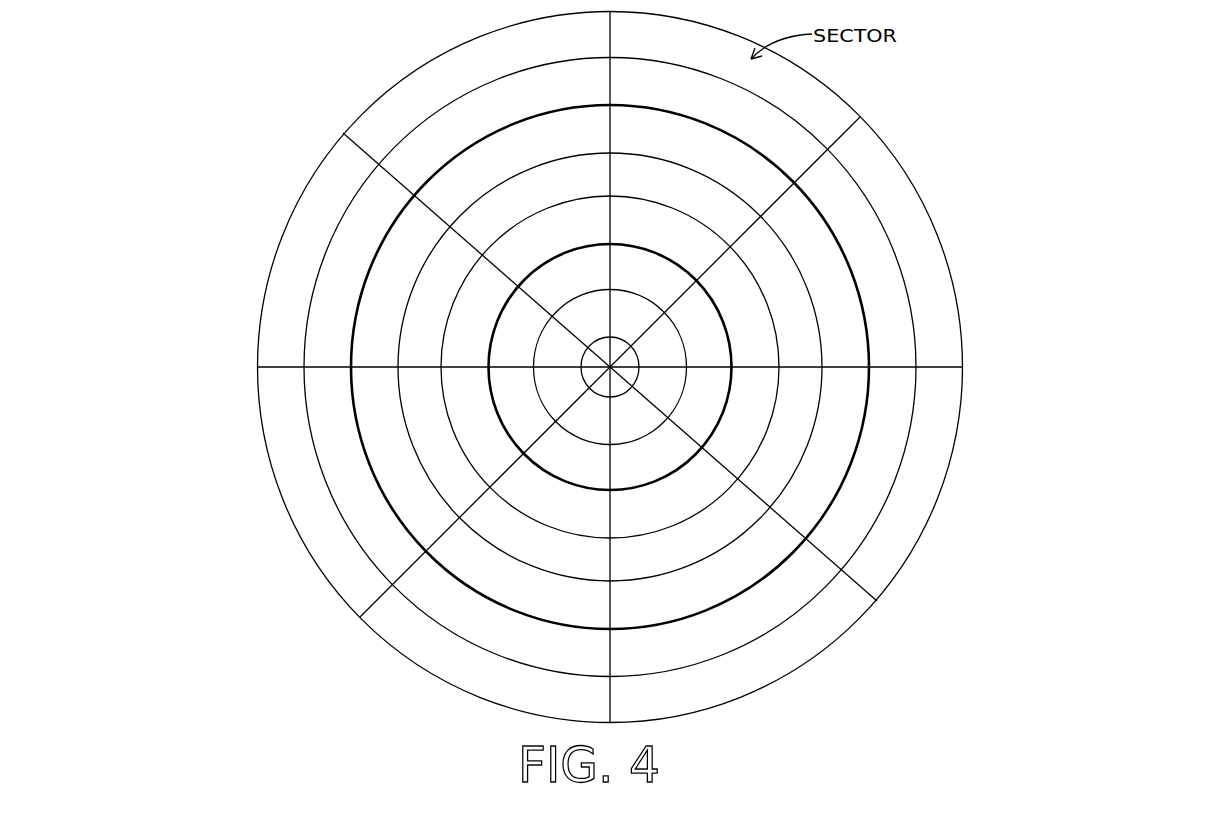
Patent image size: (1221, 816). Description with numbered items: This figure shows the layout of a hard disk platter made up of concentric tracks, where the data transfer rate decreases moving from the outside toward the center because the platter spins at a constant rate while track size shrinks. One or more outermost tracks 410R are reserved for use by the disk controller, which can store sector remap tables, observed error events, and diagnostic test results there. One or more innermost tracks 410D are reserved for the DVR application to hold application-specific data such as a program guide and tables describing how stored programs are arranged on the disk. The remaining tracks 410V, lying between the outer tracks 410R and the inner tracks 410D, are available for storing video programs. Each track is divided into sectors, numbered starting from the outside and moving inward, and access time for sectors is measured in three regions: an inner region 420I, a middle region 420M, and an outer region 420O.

The innermost tracks 410D is at (565, 357).
The remaining tracks 410V is at (467, 402).
The outermost tracks 410R is at (860, 257).
The inner region 420I is at (748, 397).
The middle region 420M is at (778, 458).
The outer region 420O is at (810, 505).